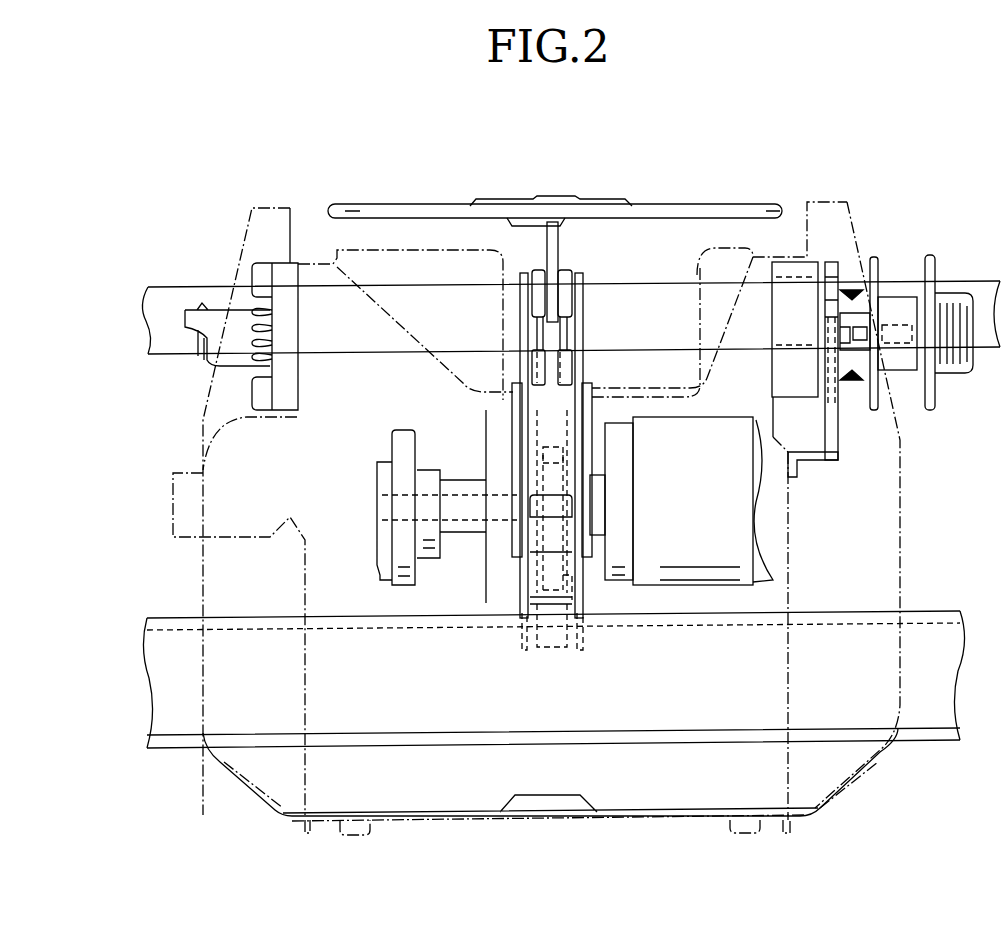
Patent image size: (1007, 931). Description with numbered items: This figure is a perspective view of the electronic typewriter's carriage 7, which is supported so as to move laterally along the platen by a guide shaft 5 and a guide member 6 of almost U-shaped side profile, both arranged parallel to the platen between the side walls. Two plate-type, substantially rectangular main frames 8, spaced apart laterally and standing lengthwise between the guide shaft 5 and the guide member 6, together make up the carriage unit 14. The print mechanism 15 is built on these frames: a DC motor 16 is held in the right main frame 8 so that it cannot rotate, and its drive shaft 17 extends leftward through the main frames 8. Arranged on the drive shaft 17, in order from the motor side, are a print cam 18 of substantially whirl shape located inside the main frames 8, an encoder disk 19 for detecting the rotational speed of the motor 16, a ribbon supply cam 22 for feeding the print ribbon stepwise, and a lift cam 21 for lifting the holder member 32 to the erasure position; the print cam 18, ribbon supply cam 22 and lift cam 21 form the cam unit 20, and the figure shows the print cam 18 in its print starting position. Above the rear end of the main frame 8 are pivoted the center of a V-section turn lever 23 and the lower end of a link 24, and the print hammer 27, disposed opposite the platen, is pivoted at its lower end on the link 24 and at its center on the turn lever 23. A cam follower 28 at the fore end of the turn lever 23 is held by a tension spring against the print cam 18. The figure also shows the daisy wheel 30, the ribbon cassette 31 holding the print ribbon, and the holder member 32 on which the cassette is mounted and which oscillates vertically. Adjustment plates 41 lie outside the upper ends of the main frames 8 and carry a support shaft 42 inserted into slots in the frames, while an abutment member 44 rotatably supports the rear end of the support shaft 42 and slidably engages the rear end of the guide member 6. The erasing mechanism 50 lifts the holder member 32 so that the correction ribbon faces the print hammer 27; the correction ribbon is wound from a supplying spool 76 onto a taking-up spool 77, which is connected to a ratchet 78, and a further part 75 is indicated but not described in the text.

The guide shaft 5 is at (176, 287).
The guide member 6 is at (455, 750).
The carriage 7 is at (497, 655).
The main frame 8 is at (518, 328).
The carriage unit 14 is at (452, 293).
The print mechanism 15 is at (514, 245).
The DC motor 16 is at (707, 587).
The drive shaft 17 is at (460, 525).
The print cam 18 is at (572, 590).
The encoder disk 19 is at (485, 433).
The cam unit 20 is at (450, 667).
The lift cam 21 is at (403, 585).
The ribbon supply cam 22 is at (432, 557).
The turn lever 23 is at (582, 310).
The link 24 is at (582, 358).
The print hammer 27 is at (562, 247).
The cam follower 28 is at (555, 505).
The daisy wheel 30 is at (680, 210).
The ribbon cassette 31 is at (900, 527).
The holder member 32 is at (788, 570).
The adjustment plate 41 is at (592, 387).
The support shaft 42 is at (560, 553).
The abutment member 44 is at (548, 622).
The erasing mechanism 50 is at (372, 395).
The knob 75 is at (923, 233).
The supplying spool 76 is at (237, 367).
The taking-up spool 77 is at (898, 297).
The ratchet 78 is at (832, 262).